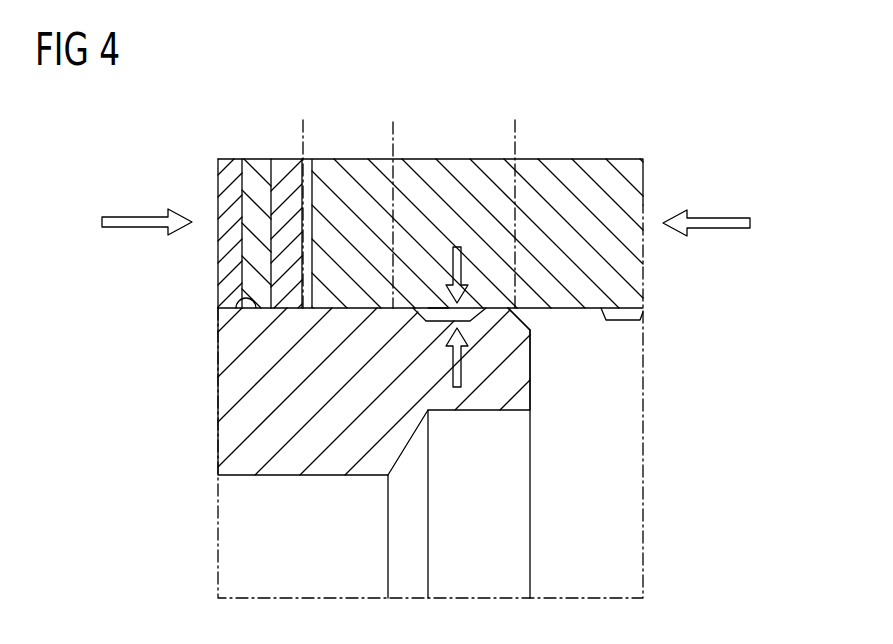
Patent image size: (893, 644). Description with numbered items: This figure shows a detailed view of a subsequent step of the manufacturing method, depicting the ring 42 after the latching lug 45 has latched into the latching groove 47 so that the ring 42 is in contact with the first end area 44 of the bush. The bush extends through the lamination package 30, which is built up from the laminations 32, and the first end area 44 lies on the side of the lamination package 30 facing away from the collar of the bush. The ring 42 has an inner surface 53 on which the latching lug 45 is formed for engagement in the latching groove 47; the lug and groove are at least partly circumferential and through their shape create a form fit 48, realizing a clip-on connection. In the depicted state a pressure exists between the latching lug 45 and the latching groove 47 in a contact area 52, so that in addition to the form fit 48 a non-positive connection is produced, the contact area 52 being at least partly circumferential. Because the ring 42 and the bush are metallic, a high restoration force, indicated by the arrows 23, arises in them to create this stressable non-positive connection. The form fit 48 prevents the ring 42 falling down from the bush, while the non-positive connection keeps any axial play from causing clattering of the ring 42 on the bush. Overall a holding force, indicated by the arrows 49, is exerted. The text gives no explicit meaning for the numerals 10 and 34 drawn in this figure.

The sealing arrangement 10 is at (138, 515).
The arrows indicating restoration force 23 is at (470, 250).
The lamination package 30 is at (303, 120).
The laminations 32 is at (240, 250).
The second layer 34 is at (232, 300).
The ring 42 is at (616, 170).
The first end area 44 is at (228, 406).
The latching lug 45 is at (523, 322).
The latching groove 47 is at (438, 304).
The form fit 48 is at (393, 122).
The arrows indicating holding force 49 is at (137, 215).
The contact area 52 is at (478, 316).
The inner surface 53 is at (640, 320).